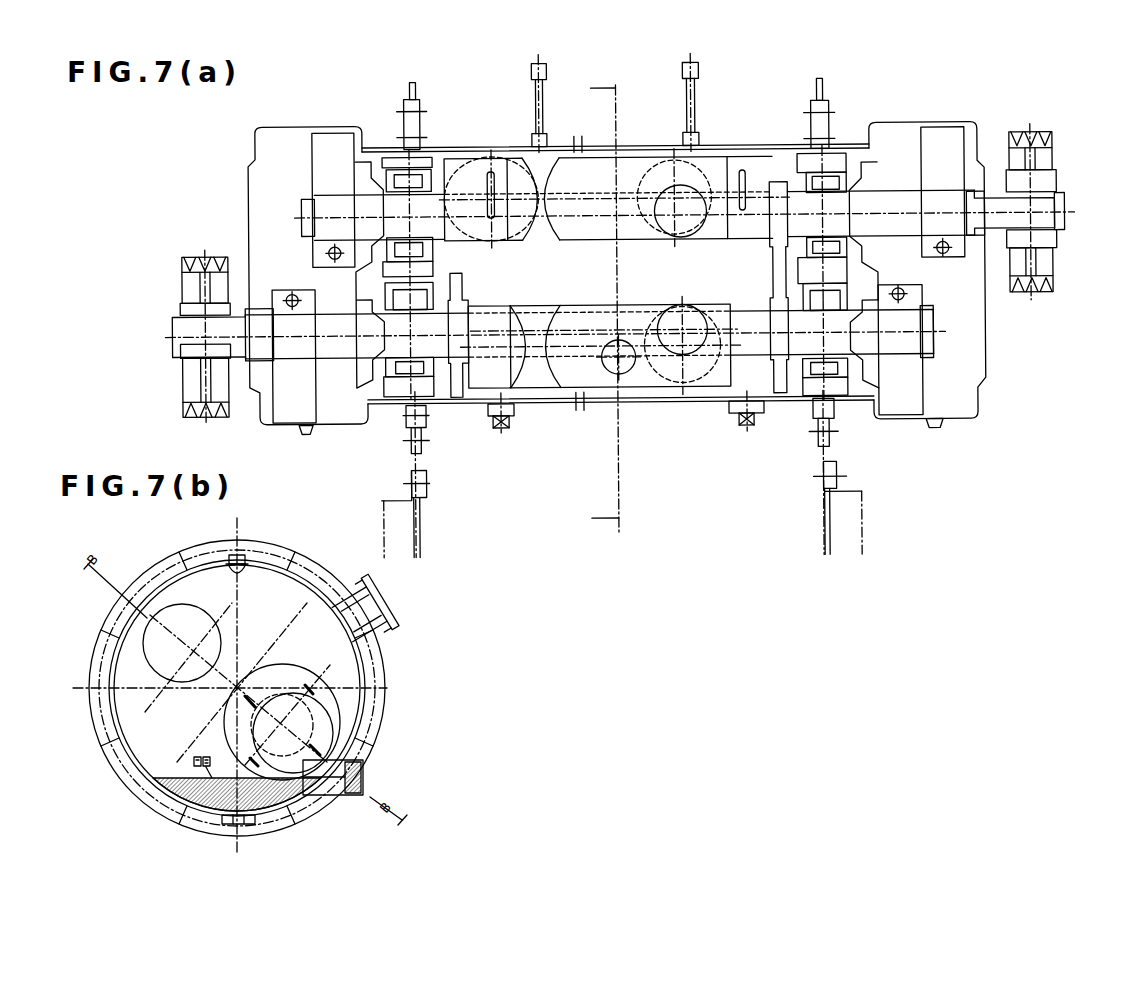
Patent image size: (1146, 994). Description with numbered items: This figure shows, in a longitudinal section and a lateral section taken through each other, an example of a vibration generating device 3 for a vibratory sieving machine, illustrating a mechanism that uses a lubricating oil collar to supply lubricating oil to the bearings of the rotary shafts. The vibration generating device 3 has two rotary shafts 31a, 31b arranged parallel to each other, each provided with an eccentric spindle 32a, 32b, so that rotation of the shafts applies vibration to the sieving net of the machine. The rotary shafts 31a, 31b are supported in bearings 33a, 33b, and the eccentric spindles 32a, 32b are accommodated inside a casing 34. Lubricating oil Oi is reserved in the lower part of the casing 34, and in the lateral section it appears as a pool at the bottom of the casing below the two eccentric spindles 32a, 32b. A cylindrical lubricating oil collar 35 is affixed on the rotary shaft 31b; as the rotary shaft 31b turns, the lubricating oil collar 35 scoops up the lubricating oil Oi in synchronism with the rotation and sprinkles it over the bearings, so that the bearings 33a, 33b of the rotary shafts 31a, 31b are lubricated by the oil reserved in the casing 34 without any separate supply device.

The vibration generating device 3 is at (1045, 114).
The rotary shaft 31a is at (1049, 216).
The rotary shaft 31b is at (192, 320).
The eccentric spindle 32a is at (339, 138).
In FIG. 7b, the eccentric spindle 32a is at (180, 606).
The eccentric spindle 32b is at (288, 408).
In FIG. 7b, the eccentric spindle 32b is at (333, 728).
The bearing 33a is at (838, 160).
The bearing 33b is at (418, 176).
The casing 34 is at (650, 402).
In FIG. 7b, the casing 34 is at (340, 716).
The lubricating oil collar 35 is at (460, 397).
In FIG. 7b, the lubricating oil Oi is at (294, 793).